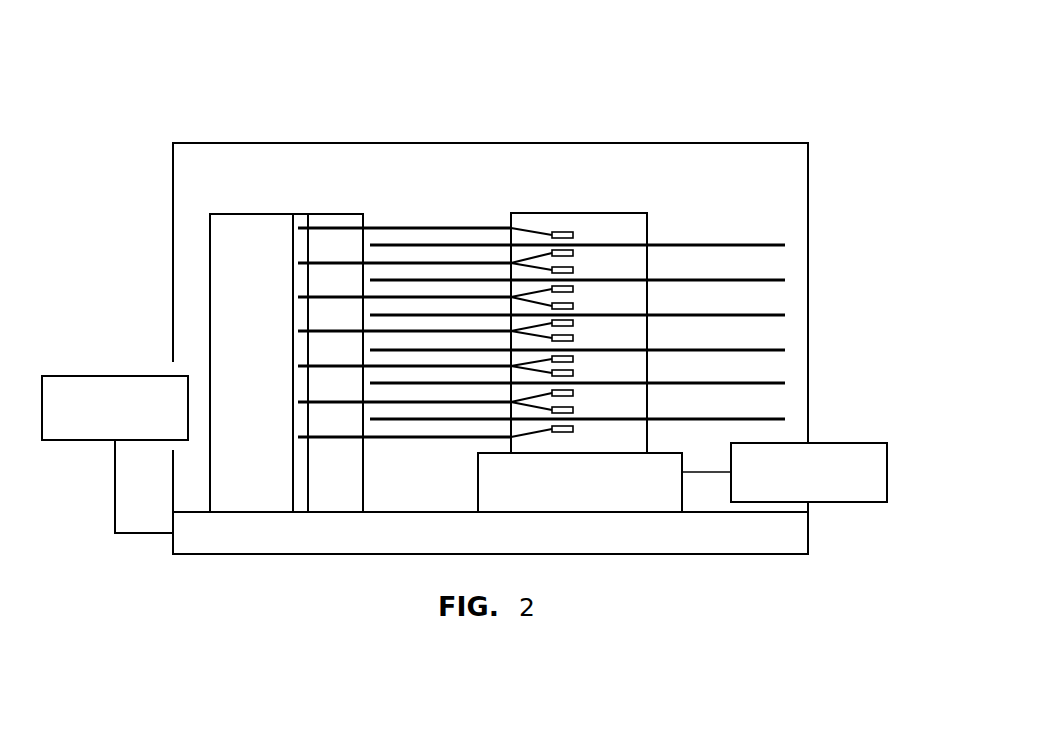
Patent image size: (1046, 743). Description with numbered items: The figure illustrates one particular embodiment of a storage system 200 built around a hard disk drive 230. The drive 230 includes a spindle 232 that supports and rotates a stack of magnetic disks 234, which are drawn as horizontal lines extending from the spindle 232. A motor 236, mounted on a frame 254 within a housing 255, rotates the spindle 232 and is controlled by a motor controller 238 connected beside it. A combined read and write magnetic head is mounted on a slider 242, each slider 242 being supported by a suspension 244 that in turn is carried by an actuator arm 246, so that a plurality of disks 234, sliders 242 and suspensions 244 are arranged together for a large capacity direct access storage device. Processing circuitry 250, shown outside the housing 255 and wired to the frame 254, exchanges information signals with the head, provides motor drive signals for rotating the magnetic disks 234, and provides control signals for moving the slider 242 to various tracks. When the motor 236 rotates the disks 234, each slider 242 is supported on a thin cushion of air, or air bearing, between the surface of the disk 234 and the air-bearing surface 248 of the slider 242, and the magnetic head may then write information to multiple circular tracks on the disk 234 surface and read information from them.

The storage system 200 is at (140, 91).
The housing 255 is at (748, 143).
The frame 254 is at (228, 555).
The processing circuitry 250 is at (84, 376).
The hard disk drive 230 is at (702, 210).
The spindle 232 is at (634, 213).
The motor 236 is at (594, 495).
The motor controller 238 is at (845, 502).
The magnetic disks 234 is at (781, 246).
The actuator arm 246 is at (478, 262).
The suspension 244 is at (548, 255).
The slider 242 is at (575, 252).
The air-bearing surface 248 is at (575, 377).